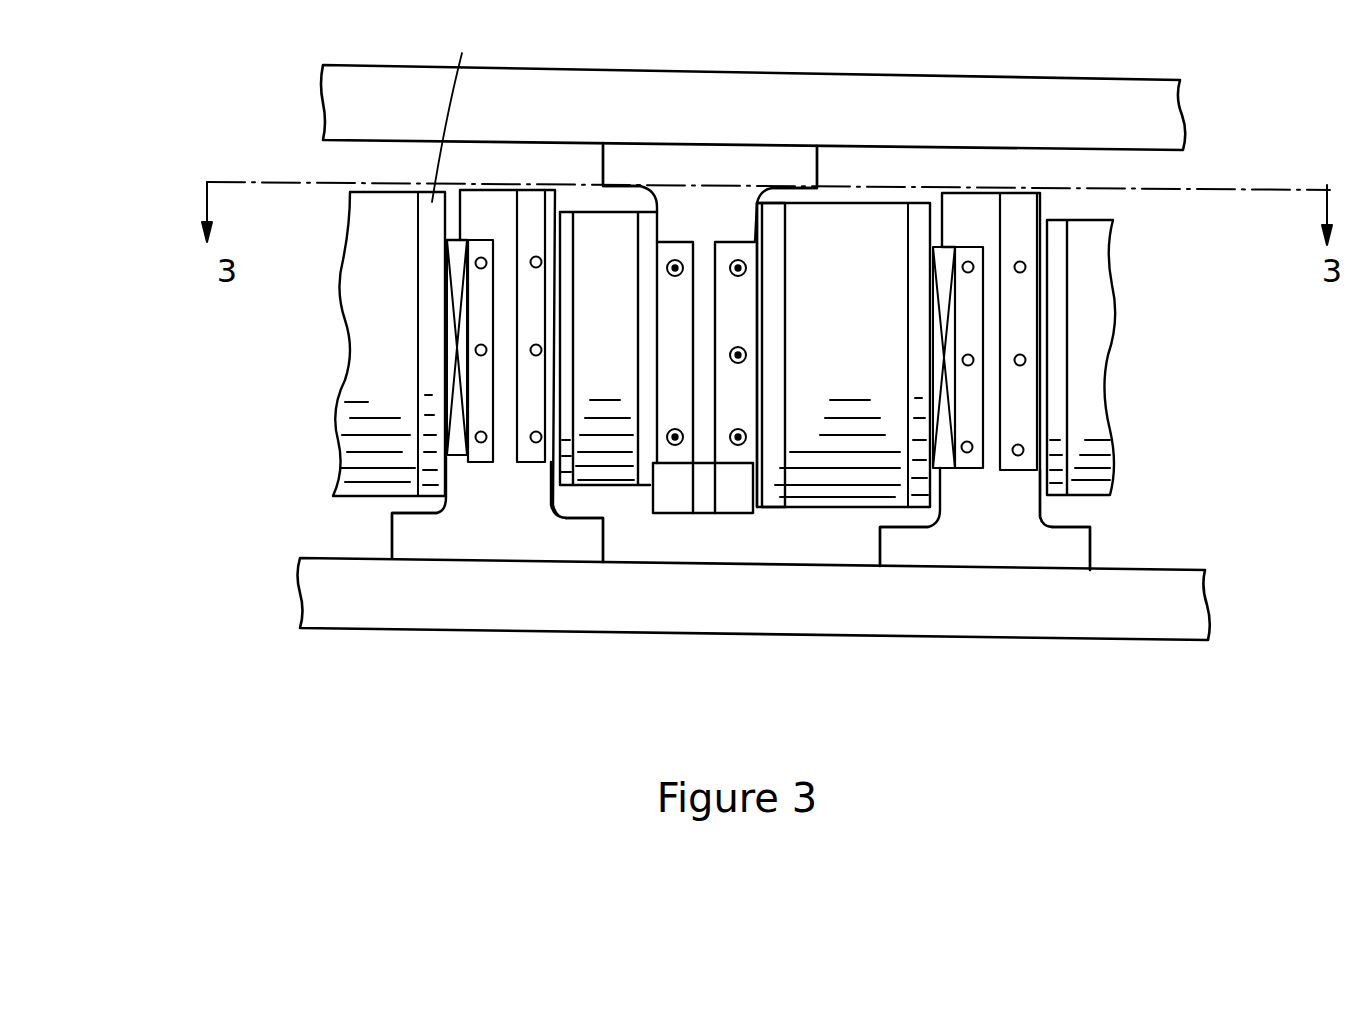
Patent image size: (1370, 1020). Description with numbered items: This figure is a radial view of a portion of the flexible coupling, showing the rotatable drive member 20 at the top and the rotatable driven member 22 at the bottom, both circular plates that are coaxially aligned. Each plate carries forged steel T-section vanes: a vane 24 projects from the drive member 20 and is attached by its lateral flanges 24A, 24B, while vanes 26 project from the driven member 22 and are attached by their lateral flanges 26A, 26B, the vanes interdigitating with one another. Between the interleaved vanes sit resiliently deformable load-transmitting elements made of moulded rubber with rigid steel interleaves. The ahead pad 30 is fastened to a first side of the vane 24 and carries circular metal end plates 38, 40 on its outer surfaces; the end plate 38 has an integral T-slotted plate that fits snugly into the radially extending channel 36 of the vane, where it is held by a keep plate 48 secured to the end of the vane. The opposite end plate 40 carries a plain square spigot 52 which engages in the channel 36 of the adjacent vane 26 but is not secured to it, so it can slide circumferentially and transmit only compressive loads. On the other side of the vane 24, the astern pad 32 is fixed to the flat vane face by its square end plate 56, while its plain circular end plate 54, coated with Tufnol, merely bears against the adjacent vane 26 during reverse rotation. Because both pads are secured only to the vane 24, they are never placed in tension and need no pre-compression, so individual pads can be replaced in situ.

The drive member 20 is at (498, 103).
The driven member 22 is at (477, 608).
The vane 24 is at (710, 256).
The lateral flange 24A is at (805, 167).
The lateral flange 24B is at (607, 158).
The vane 26 is at (732, 603).
The lateral flange 26A is at (397, 533).
The lateral flange 26B is at (583, 548).
The ahead pad 30 is at (375, 318).
The astern pad 32 is at (602, 230).
The channel 36 is at (475, 393).
The end plate 38 is at (773, 212).
The end plate 40 is at (460, 233).
The keep plate 48 is at (735, 455).
The spigot 52 is at (942, 268).
The circular end plate 54 is at (565, 477).
The square end plate 56 is at (683, 455).